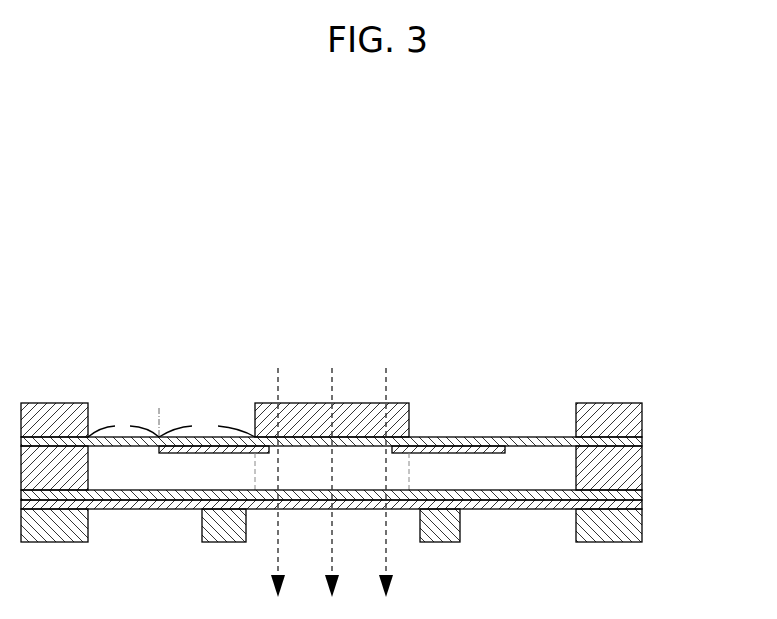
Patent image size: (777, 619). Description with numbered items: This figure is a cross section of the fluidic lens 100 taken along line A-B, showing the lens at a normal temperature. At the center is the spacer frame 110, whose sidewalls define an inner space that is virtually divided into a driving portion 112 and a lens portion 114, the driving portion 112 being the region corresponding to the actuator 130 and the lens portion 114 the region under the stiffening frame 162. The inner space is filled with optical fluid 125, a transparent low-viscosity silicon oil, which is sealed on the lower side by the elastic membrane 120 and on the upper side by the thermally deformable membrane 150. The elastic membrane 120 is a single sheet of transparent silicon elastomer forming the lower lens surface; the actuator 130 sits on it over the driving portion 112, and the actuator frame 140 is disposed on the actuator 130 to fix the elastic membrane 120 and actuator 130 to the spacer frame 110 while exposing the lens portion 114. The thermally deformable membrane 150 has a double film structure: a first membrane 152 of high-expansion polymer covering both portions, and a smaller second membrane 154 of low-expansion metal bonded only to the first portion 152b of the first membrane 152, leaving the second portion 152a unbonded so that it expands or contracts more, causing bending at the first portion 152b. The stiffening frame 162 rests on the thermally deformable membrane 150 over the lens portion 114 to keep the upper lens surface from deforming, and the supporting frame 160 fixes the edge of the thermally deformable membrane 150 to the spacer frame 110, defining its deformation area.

The fluidic lens 100 is at (562, 330).
The spacer frame 110 is at (632, 469).
The driving portion 112 is at (181, 481).
The lens portion 114 is at (325, 481).
The elastic membrane 120 is at (632, 495).
The optical fluid 125 is at (545, 475).
The actuator 130 is at (632, 505).
The actuator frame 140 is at (637, 530).
The thermally deformable membrane 150 is at (487, 332).
The first membrane 152 is at (508, 438).
The second portion 152a is at (123, 422).
The first portion 152b is at (207, 423).
The second membrane 154 is at (452, 450).
The supporting frame 160 is at (608, 410).
The stiffening frame 162 is at (265, 410).